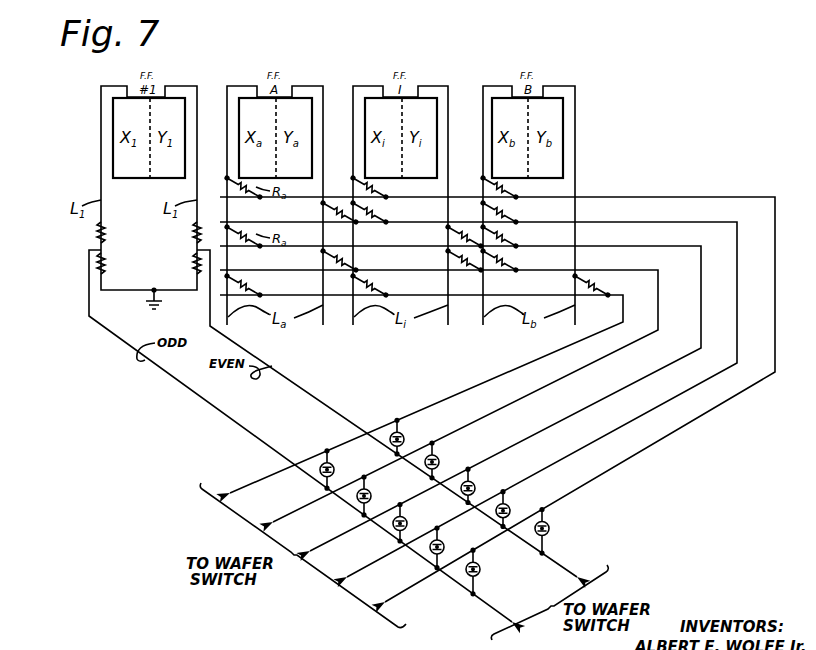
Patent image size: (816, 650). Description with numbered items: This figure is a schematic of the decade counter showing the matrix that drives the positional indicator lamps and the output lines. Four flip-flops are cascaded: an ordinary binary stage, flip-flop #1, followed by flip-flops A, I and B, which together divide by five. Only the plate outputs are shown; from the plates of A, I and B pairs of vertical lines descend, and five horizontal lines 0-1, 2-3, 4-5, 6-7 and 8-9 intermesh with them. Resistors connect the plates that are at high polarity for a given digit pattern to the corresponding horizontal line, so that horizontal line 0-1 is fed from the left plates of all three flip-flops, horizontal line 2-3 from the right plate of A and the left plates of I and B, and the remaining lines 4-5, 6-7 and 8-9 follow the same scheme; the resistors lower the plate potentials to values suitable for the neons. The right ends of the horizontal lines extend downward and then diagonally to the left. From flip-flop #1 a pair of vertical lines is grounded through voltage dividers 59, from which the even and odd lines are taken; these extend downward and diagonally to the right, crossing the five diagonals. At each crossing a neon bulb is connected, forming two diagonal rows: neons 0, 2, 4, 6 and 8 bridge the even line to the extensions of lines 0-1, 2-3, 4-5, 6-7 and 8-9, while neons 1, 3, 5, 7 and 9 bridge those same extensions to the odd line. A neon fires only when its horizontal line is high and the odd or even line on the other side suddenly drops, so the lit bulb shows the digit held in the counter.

The voltage divider 59 is at (197, 252).
The neon bulb 0 is at (549, 530).
The neon bulb 1 is at (486, 564).
The neon bulb 2 is at (510, 512).
The neon bulb 3 is at (450, 542).
The neon bulb 4 is at (475, 490).
The neon bulb 5 is at (414, 518).
The neon bulb 6 is at (439, 464).
The neon bulb 7 is at (378, 491).
The neon bulb 8 is at (404, 441).
The neon bulb 9 is at (340, 465).
The horizontal line 0-1 is at (497, 396).
The horizontal line 2-3 is at (478, 396).
The horizontal line 4-5 is at (460, 395).
The horizontal line 6-7 is at (439, 393).
The horizontal line 8-9 is at (422, 390).